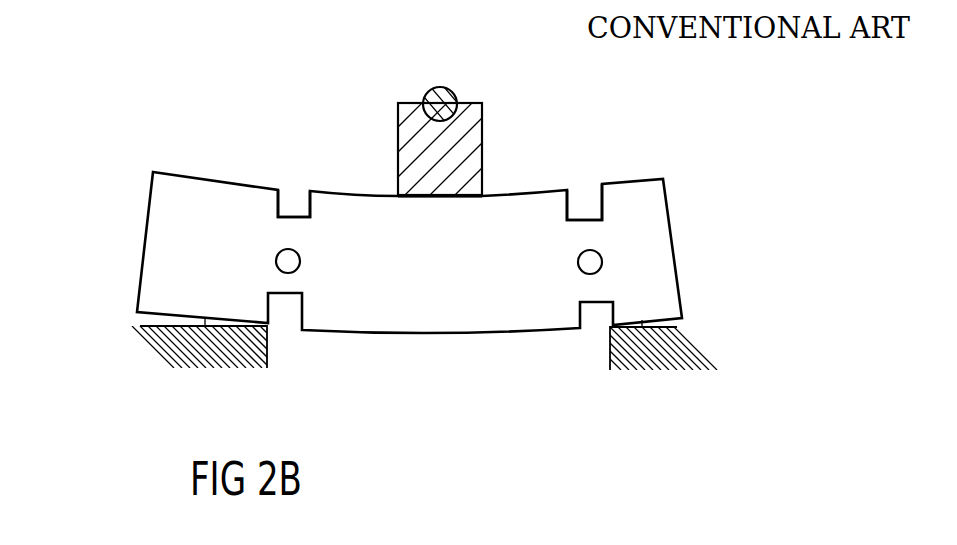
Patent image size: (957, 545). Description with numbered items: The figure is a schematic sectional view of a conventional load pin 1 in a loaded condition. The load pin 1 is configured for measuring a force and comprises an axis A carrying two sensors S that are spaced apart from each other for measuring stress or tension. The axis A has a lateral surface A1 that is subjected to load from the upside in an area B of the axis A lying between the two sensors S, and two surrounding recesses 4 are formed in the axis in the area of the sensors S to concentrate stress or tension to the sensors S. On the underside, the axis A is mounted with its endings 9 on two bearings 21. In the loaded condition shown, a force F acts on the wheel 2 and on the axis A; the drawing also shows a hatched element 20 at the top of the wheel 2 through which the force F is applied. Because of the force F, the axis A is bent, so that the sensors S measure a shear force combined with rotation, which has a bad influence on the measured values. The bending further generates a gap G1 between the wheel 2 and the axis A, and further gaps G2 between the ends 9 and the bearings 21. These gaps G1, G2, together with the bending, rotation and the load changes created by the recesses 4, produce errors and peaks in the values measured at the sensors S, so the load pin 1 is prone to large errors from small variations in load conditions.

The load pin 1 is at (547, 212).
The wheel 2 is at (477, 97).
The surrounding recesses 4 is at (295, 207).
The endings 9 is at (205, 327).
The ball / loading roller 20 is at (439, 80).
The bearings 21 is at (162, 345).
The force F is at (440, 80).
The axis A is at (662, 285).
The lateral surface A1 is at (498, 208).
The area B is at (432, 198).
The gap G1 is at (457, 206).
The gaps G2 is at (137, 319).
The sensors S is at (278, 261).